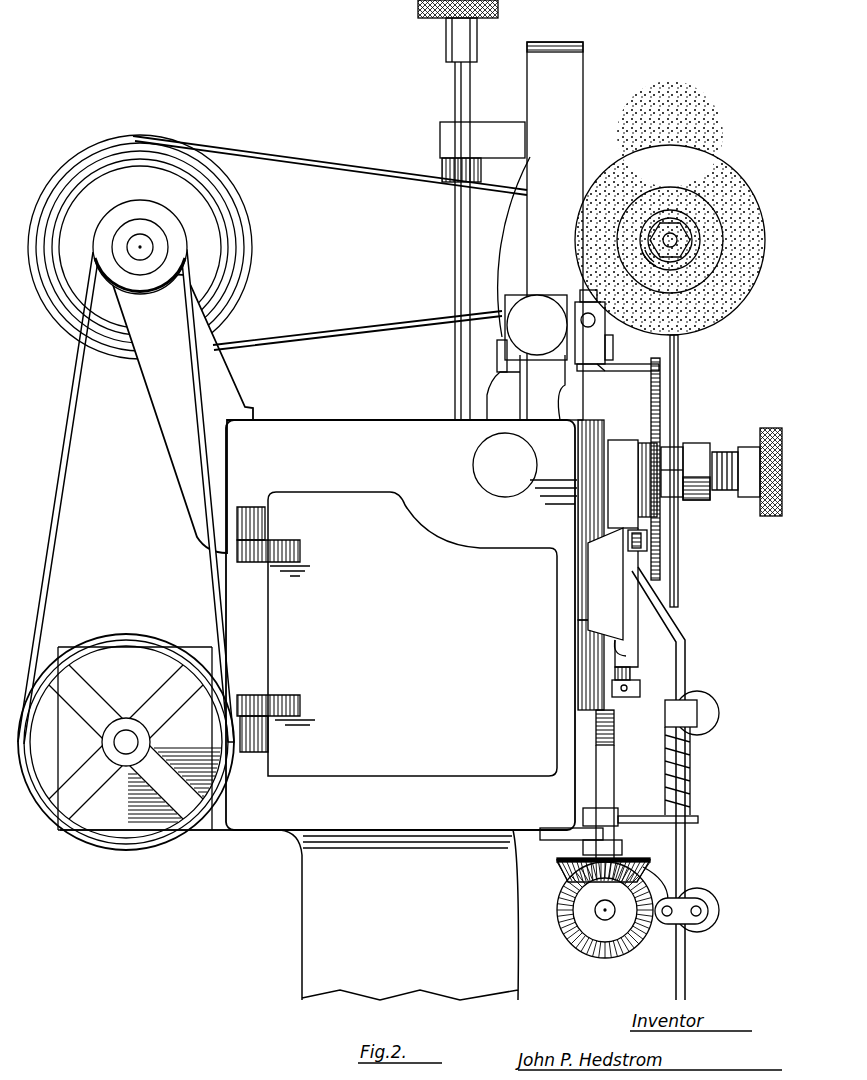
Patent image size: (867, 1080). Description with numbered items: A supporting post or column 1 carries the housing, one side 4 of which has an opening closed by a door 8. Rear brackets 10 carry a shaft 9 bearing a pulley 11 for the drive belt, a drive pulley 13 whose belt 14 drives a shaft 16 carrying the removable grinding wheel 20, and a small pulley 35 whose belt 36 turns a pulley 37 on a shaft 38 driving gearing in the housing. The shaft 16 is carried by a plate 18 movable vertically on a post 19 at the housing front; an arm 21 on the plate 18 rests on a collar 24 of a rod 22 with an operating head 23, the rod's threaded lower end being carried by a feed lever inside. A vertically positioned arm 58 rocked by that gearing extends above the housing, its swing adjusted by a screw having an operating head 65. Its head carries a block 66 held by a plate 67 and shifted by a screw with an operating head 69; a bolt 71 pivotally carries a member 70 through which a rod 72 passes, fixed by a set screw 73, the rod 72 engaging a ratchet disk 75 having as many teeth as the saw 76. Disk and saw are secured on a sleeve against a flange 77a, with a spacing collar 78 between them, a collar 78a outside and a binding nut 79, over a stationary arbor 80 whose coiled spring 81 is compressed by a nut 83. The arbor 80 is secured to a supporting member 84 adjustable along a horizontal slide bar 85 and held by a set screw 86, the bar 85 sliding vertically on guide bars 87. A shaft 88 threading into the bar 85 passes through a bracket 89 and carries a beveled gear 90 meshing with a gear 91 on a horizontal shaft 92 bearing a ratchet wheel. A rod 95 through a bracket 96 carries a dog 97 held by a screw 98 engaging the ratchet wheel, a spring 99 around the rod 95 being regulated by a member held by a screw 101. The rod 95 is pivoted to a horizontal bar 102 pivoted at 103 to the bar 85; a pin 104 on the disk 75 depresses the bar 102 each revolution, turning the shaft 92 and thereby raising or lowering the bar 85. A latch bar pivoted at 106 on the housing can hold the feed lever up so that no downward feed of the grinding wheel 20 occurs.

The pedestal 1 is at (310, 893).
The base plate 4 is at (292, 803).
The housing 8 is at (405, 760).
The pulley hub 9 is at (148, 243).
The arm 10 is at (172, 400).
The pulley 11 is at (222, 232).
The pulley rim 13 is at (230, 200).
The belt 14 is at (352, 163).
The wheel spindle nut 16 is at (680, 245).
The column 18 is at (570, 135).
The pulley 19 is at (521, 268).
The grinding wheel 20 is at (668, 152).
The block 21 is at (490, 135).
The rod 22 is at (462, 210).
The knob 23 is at (445, 21).
The collar 24 is at (452, 170).
The pulley hub 35 is at (103, 252).
The belt 36 is at (62, 498).
The hand wheel 37 is at (123, 845).
The hand wheel hub 38 is at (126, 740).
The bracket 58 is at (515, 390).
The opening 65 is at (495, 480).
The block 66 is at (557, 358).
The bracket 67 is at (497, 374).
The roller 69 is at (517, 328).
The bracket 70 is at (605, 340).
The bracket arm 71 is at (605, 356).
The bar 72 is at (585, 310).
The pin 73 is at (592, 295).
The rack 75 is at (652, 395).
The threaded rod 76 is at (677, 400).
The block 77a is at (650, 445).
The nut 78 is at (708, 500).
The washer 78a is at (696, 448).
The collar 79 is at (690, 490).
The spring 80 is at (730, 458).
The shaft 81 is at (740, 478).
The knurled knob 83 is at (775, 516).
The bracket 84 is at (633, 627).
The notch 85 is at (637, 653).
The block 86 is at (640, 688).
The post 87 is at (590, 673).
The shaft 88 is at (597, 780).
The bearing 89 is at (600, 840).
The bevel gear 90 is at (567, 876).
The brush wheel 91 is at (608, 958).
The brush hub 92 is at (600, 917).
The lever 95 is at (686, 663).
The bar 96 is at (660, 822).
The link 97 is at (650, 872).
The roller link 98 is at (720, 910).
The spring 99 is at (688, 775).
The roller 101 is at (707, 703).
The latch 102 is at (640, 553).
The latch block 103 is at (640, 533).
The plate 104 is at (640, 516).
The block 106 is at (668, 710).